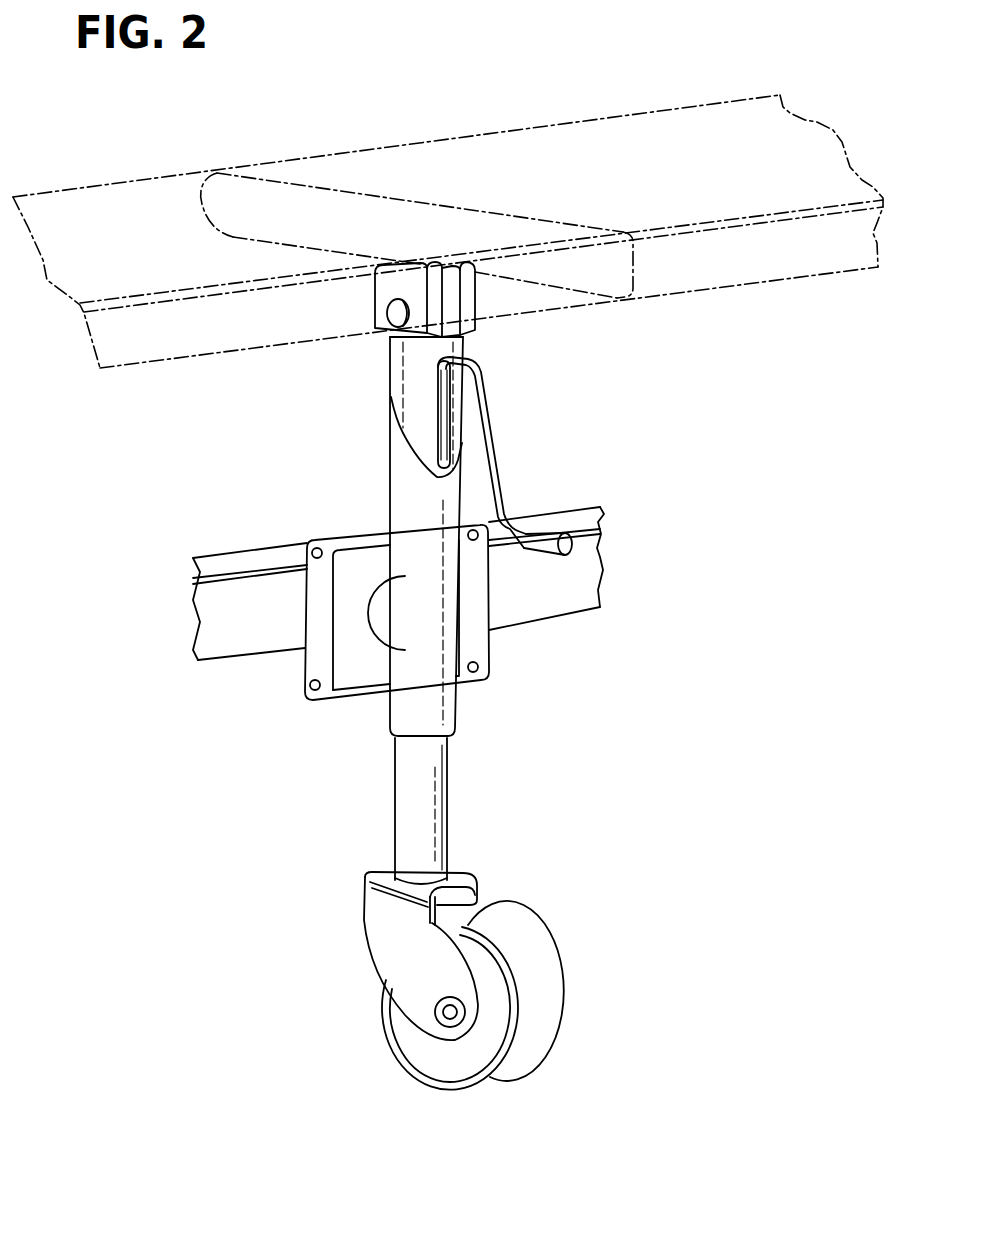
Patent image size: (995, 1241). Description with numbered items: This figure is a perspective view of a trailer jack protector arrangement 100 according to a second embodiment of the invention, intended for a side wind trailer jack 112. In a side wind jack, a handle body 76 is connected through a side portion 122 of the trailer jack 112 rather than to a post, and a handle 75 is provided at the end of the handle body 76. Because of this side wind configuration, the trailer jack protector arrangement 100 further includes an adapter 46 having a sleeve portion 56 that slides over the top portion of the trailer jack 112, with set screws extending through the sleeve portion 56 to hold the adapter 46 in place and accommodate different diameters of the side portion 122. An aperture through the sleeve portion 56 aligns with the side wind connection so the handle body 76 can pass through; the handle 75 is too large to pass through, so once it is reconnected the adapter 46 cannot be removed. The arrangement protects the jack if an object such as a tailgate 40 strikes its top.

The tailgate 40 is at (695, 117).
The trailer jack protector arrangement 100 is at (676, 373).
The sleeve portion 56 is at (397, 365).
The adapter 46 is at (362, 388).
The handle body 76 is at (485, 428).
The handle 75 is at (549, 536).
The trailer jack 112 is at (562, 692).
The side portion 122 is at (410, 710).